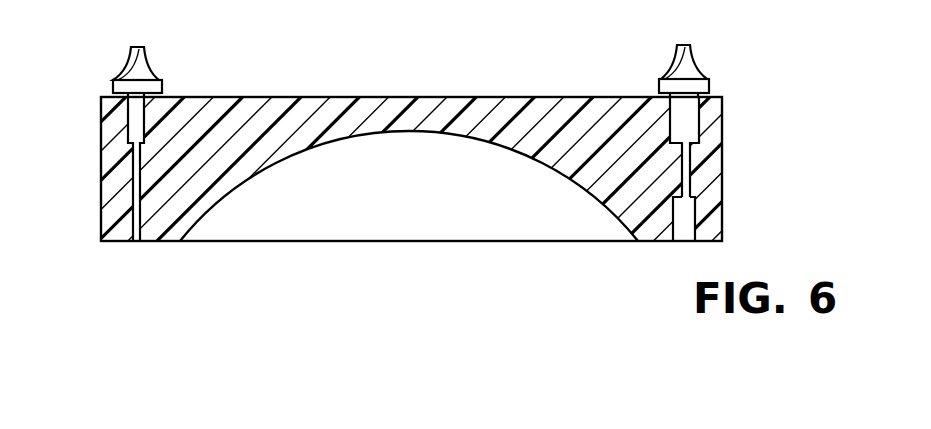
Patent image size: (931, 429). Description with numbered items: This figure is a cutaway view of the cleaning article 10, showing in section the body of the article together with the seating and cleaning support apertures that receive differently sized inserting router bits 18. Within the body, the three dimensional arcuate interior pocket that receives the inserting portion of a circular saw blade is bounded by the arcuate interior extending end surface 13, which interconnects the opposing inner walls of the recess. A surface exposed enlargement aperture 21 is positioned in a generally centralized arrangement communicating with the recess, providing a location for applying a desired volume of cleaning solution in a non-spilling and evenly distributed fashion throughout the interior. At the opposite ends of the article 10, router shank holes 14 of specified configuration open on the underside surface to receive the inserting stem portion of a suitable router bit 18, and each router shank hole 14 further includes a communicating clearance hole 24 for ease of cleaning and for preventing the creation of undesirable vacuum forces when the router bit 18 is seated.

The article 10 is at (172, 266).
The arcuate interior extending end surface 13 is at (256, 175).
The router shank hole 14 is at (693, 226).
The router bit 18 is at (132, 65).
The surface exposed enlargement aperture 21 is at (412, 229).
The clearance hole 24 is at (130, 189).